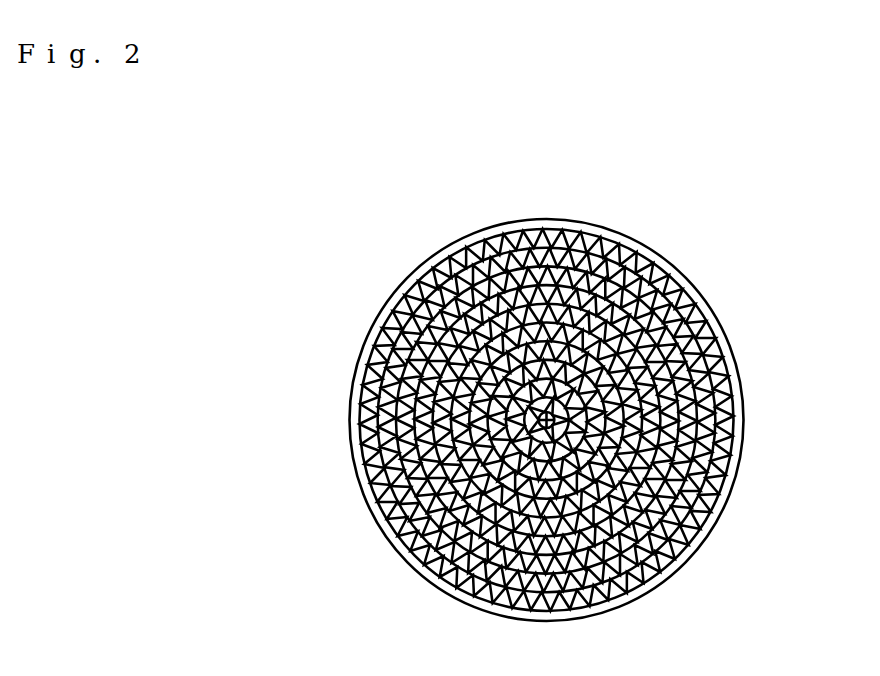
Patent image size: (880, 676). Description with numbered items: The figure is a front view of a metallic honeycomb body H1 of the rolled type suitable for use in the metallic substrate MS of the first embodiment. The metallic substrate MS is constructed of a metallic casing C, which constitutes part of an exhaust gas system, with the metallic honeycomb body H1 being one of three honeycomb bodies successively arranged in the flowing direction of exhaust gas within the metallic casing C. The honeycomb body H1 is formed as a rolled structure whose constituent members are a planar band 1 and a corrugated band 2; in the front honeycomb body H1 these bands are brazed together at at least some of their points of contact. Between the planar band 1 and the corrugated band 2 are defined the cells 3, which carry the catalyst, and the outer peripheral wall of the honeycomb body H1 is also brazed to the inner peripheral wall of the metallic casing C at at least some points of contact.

The metallic substrate MS is at (683, 258).
The metallic honeycomb body H1 is at (690, 290).
The planar band 1 is at (720, 338).
The corrugated band 2 is at (712, 380).
The cells 3 is at (710, 399).
The metallic casing C is at (732, 474).